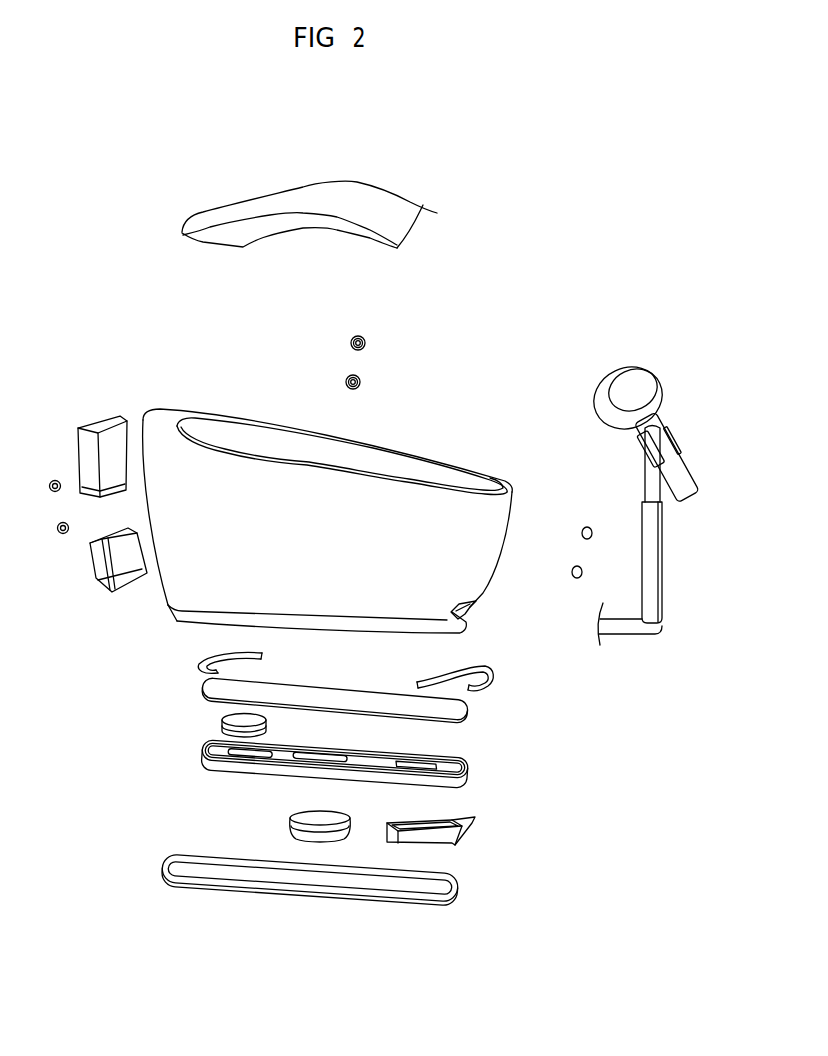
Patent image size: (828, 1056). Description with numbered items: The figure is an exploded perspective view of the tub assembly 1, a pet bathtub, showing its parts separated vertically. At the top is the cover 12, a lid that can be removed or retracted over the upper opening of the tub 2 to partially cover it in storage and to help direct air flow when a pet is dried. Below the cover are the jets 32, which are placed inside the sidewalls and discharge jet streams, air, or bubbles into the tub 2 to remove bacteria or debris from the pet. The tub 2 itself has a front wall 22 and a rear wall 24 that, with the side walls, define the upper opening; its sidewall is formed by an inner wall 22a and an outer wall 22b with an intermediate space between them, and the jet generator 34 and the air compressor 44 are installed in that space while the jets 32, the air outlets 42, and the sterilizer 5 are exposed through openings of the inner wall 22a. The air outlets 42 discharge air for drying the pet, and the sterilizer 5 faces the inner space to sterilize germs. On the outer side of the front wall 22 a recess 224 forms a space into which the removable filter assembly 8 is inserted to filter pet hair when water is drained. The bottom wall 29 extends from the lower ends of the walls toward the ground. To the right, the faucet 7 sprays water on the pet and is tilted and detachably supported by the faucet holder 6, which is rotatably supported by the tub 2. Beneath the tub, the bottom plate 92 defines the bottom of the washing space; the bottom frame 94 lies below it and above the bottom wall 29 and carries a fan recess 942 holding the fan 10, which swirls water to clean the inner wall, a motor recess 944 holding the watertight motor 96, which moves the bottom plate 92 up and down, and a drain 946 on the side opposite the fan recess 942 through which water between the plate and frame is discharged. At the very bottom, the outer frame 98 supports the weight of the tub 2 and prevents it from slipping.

The tub assembly 1 is at (240, 167).
The cover 12 is at (416, 196).
The jet 32 is at (358, 335).
The tub 2 is at (341, 512).
The front wall 22 is at (475, 578).
The inner wall 22a is at (200, 420).
The outer wall 22b is at (166, 408).
The rear wall 24 is at (178, 584).
The recess 224 is at (465, 610).
The bottom wall 29 is at (188, 628).
The jet generator 34 is at (111, 440).
The air compressor 44 is at (107, 580).
The air outlet 42 is at (53, 470).
The faucet 7 is at (675, 393).
The faucet holder 6 is at (668, 580).
The sterilizer 5 is at (495, 683).
The bottom plate 92 is at (235, 690).
The fan 10 is at (218, 720).
The bottom frame 94 is at (340, 785).
The fan recess 942 is at (238, 765).
The motor recess 944 is at (300, 763).
The drain 946 is at (465, 768).
The motor 96 is at (300, 827).
The filter assembly 8 is at (463, 833).
The outer frame 98 is at (445, 893).